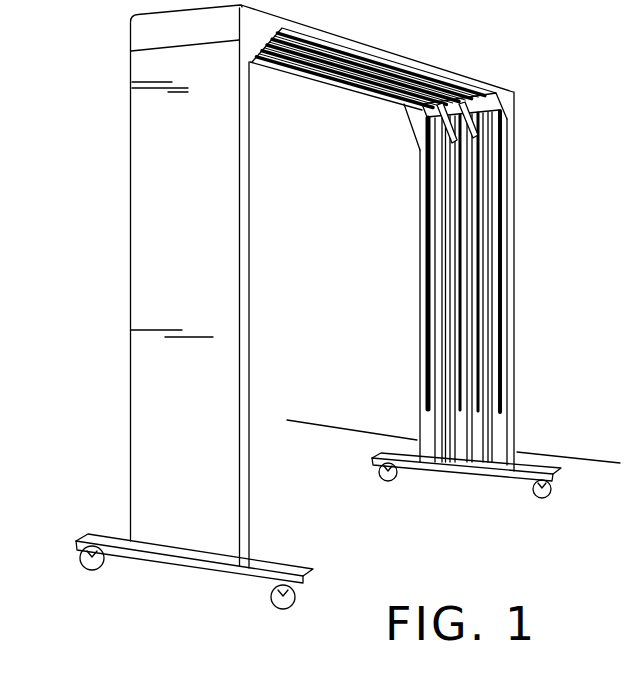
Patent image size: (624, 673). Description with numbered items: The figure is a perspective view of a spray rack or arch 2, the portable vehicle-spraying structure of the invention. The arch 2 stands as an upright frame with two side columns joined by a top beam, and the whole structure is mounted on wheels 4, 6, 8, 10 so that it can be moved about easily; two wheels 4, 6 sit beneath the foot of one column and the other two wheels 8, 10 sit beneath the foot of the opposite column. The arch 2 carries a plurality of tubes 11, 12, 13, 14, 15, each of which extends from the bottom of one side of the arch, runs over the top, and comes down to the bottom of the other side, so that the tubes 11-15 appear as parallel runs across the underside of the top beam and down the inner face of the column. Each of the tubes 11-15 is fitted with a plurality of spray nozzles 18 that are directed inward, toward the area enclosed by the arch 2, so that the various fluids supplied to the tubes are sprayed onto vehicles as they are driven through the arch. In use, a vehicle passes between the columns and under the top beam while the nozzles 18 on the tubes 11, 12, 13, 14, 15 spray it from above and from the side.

The spray rack or arch 2 is at (140, 278).
The wheel 4 is at (88, 567).
The wheel 6 is at (272, 602).
The wheel 8 is at (392, 481).
The wheel 10 is at (536, 497).
The tube 11 is at (496, 172).
The tube 12 is at (478, 198).
The tube 13 is at (458, 233).
The tube 14 is at (443, 272).
The tube 15 is at (430, 316).
The spray nozzles 18 is at (441, 78).